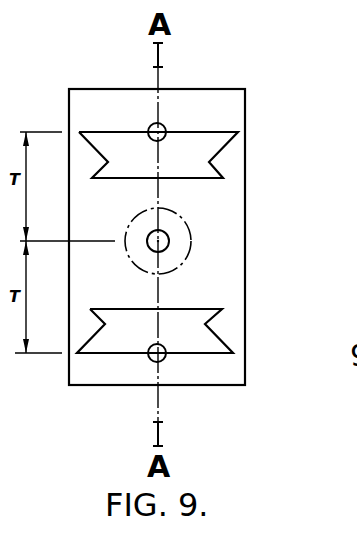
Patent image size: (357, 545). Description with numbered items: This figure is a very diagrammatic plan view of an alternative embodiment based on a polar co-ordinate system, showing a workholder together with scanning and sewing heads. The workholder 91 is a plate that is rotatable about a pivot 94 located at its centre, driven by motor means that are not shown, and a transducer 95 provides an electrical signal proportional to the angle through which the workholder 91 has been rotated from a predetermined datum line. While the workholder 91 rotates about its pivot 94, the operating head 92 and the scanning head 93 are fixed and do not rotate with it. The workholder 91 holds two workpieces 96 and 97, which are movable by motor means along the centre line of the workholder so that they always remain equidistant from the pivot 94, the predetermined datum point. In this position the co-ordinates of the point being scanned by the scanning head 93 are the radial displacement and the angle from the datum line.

The workholder 91 is at (246, 322).
The operating head 92 is at (164, 124).
The scanning head 93 is at (151, 359).
The pivot 94 is at (168, 234).
The transducer 95 is at (188, 252).
The workpiece 96 is at (217, 150).
The workpiece 97 is at (187, 347).